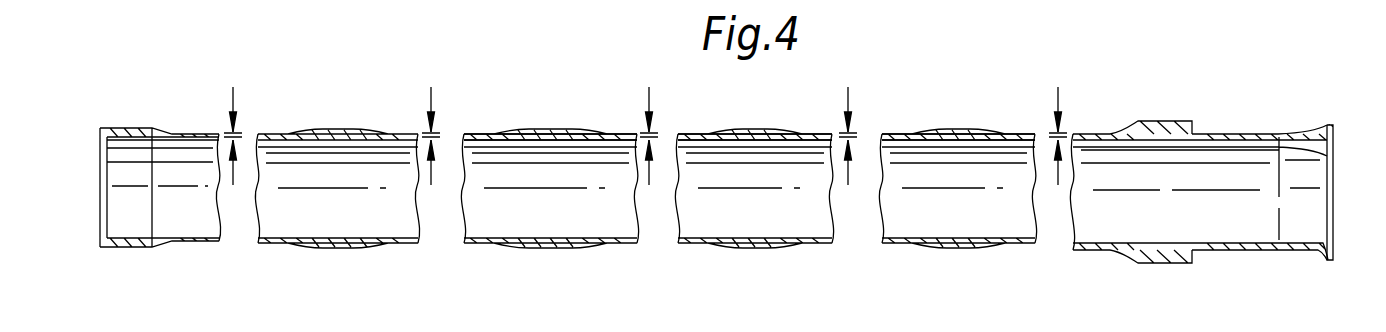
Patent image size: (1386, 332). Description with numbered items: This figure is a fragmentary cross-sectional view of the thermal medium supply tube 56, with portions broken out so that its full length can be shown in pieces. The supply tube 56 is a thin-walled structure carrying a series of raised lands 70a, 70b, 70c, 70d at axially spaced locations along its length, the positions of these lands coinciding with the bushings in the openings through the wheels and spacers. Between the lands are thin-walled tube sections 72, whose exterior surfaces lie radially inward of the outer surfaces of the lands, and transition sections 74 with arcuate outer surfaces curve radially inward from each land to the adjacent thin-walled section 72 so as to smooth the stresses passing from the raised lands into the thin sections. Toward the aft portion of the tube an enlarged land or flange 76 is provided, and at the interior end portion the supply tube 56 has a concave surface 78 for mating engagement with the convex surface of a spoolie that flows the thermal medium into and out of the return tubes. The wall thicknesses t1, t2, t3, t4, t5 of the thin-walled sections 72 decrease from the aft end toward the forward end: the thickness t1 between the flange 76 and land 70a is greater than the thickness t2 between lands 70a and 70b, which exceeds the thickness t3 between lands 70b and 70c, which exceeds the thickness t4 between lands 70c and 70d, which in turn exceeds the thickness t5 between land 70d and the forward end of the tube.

The supply tube 56 is at (498, 177).
The land 70a is at (957, 127).
The land 70b is at (753, 128).
The land 70c is at (537, 130).
The land 70d is at (335, 128).
The thin-walled tube section 72 is at (695, 133).
The transition section 74 is at (918, 132).
The flange 76 is at (1162, 120).
The concave surface 78 is at (1337, 152).
The wall thickness t1 is at (1059, 123).
The wall thickness t2 is at (849, 123).
The wall thickness t3 is at (650, 123).
The wall thickness t4 is at (432, 123).
The wall thickness t5 is at (234, 123).